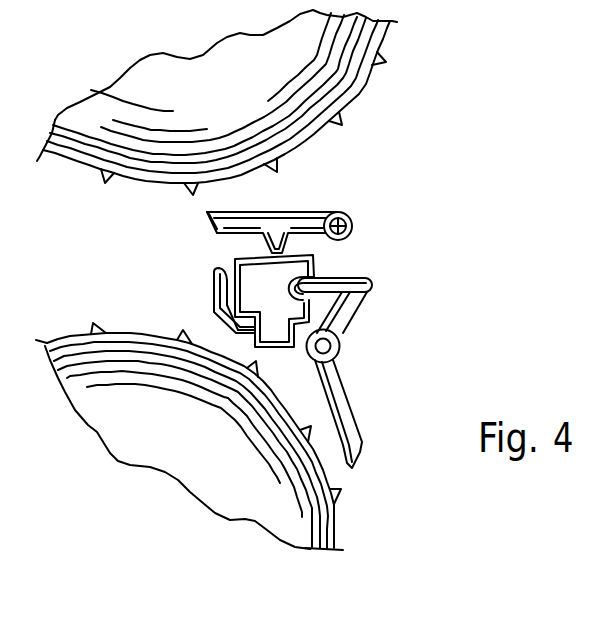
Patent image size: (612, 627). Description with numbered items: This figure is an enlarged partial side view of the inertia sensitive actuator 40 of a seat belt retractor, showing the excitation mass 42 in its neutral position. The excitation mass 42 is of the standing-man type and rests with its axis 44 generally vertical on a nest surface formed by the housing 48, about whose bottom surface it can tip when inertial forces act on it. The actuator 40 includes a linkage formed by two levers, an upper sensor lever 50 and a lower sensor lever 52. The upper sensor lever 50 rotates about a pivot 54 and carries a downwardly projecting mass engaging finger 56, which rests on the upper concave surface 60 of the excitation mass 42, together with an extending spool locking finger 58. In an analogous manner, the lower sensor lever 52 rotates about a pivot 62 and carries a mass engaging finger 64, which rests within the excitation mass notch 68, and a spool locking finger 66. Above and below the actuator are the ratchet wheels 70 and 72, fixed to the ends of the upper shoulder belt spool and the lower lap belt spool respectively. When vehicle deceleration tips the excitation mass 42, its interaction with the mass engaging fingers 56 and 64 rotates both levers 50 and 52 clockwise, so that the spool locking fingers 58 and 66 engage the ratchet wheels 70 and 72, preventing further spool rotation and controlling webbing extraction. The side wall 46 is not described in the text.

The inertia sensitive actuator 40 is at (420, 230).
The excitation mass 42 is at (279, 286).
The axis 44 is at (235, 457).
The side wall of latch body 46 is at (228, 278).
The housing 48 is at (212, 290).
The upper sensor lever 50 is at (261, 205).
The lower sensor lever 52 is at (391, 402).
The pivot 54 is at (341, 218).
The mass engaging finger 56 is at (362, 225).
The spool locking finger 58 is at (207, 223).
The upper concave surface 60 is at (236, 256).
The pivot 62 is at (336, 357).
The mass engaging finger 64 is at (308, 280).
The spool locking finger 66 is at (363, 462).
The excitation mass notch 68 is at (368, 287).
The ratchet wheel 70 is at (360, 78).
The ratchet wheel 72 is at (340, 527).